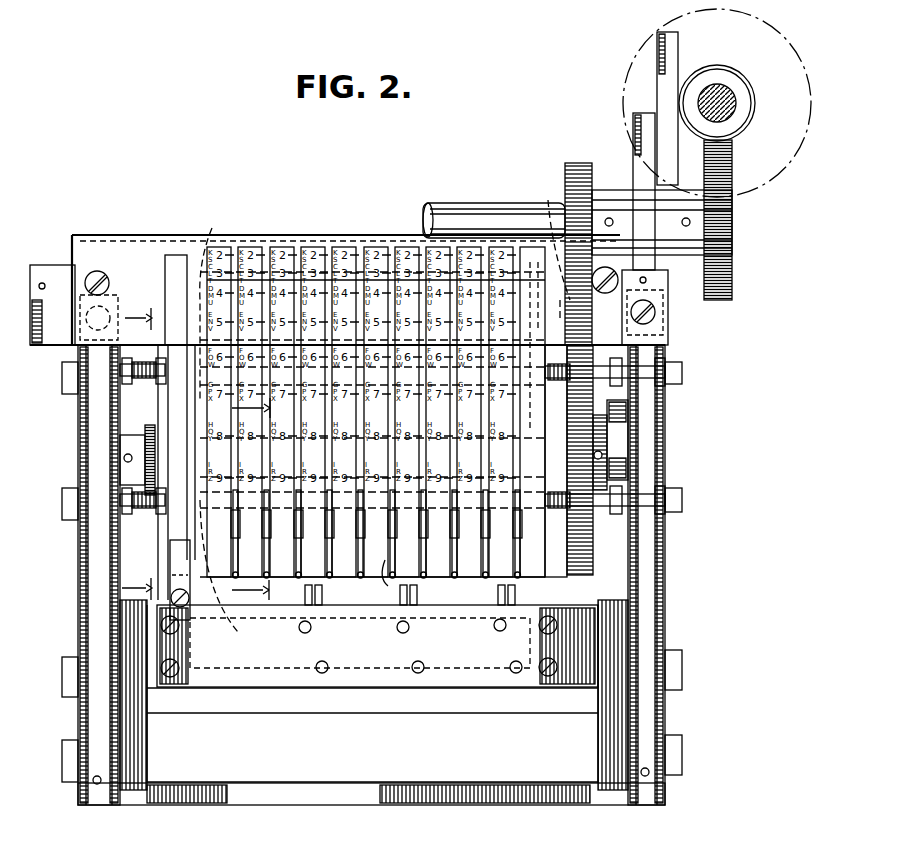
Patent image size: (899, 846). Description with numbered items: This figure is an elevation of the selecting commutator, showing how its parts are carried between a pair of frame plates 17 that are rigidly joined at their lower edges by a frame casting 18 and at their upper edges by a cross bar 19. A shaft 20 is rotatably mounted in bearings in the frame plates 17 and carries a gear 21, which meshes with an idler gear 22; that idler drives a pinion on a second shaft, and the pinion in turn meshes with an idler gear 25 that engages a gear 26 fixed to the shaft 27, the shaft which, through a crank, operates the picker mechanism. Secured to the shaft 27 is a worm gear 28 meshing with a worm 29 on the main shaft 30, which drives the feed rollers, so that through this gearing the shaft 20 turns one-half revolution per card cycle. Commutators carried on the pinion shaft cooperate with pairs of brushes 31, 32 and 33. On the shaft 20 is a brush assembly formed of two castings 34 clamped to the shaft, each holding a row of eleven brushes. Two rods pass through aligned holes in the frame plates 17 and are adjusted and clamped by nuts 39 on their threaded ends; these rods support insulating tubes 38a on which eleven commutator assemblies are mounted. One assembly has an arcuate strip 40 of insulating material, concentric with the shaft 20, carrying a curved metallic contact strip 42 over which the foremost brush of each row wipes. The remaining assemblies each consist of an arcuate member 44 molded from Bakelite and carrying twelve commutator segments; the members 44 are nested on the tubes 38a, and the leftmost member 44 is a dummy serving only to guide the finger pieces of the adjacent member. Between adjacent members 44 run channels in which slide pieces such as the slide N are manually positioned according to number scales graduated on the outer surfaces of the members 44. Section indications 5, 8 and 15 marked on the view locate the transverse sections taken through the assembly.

The section line 5 is at (258, 408).
The section line 8 is at (144, 454).
The section line 15 is at (264, 591).
The frame plates 17 is at (665, 556).
The frame casting 18 is at (440, 803).
The cross bar 19 is at (56, 292).
The shaft 20 is at (600, 442).
The gear 21 is at (593, 568).
The idler gear 22 is at (597, 398).
The idler gear 25 is at (568, 300).
The gear 26 is at (585, 168).
The shaft 27 is at (474, 216).
The worm gear 28 is at (733, 290).
The worm 29 is at (718, 70).
The main shaft 30 is at (730, 98).
The pair of brushes 31 is at (318, 600).
The pair of brushes 32 is at (413, 605).
The pair of brushes 33 is at (512, 607).
The castings 34 is at (162, 416).
The tubes 38a is at (237, 426).
The nuts 39 is at (72, 382).
The arcuate strip 40 is at (178, 255).
The contact strip 42 is at (178, 574).
The arcuate member 44 is at (420, 247).
The slide N is at (373, 582).